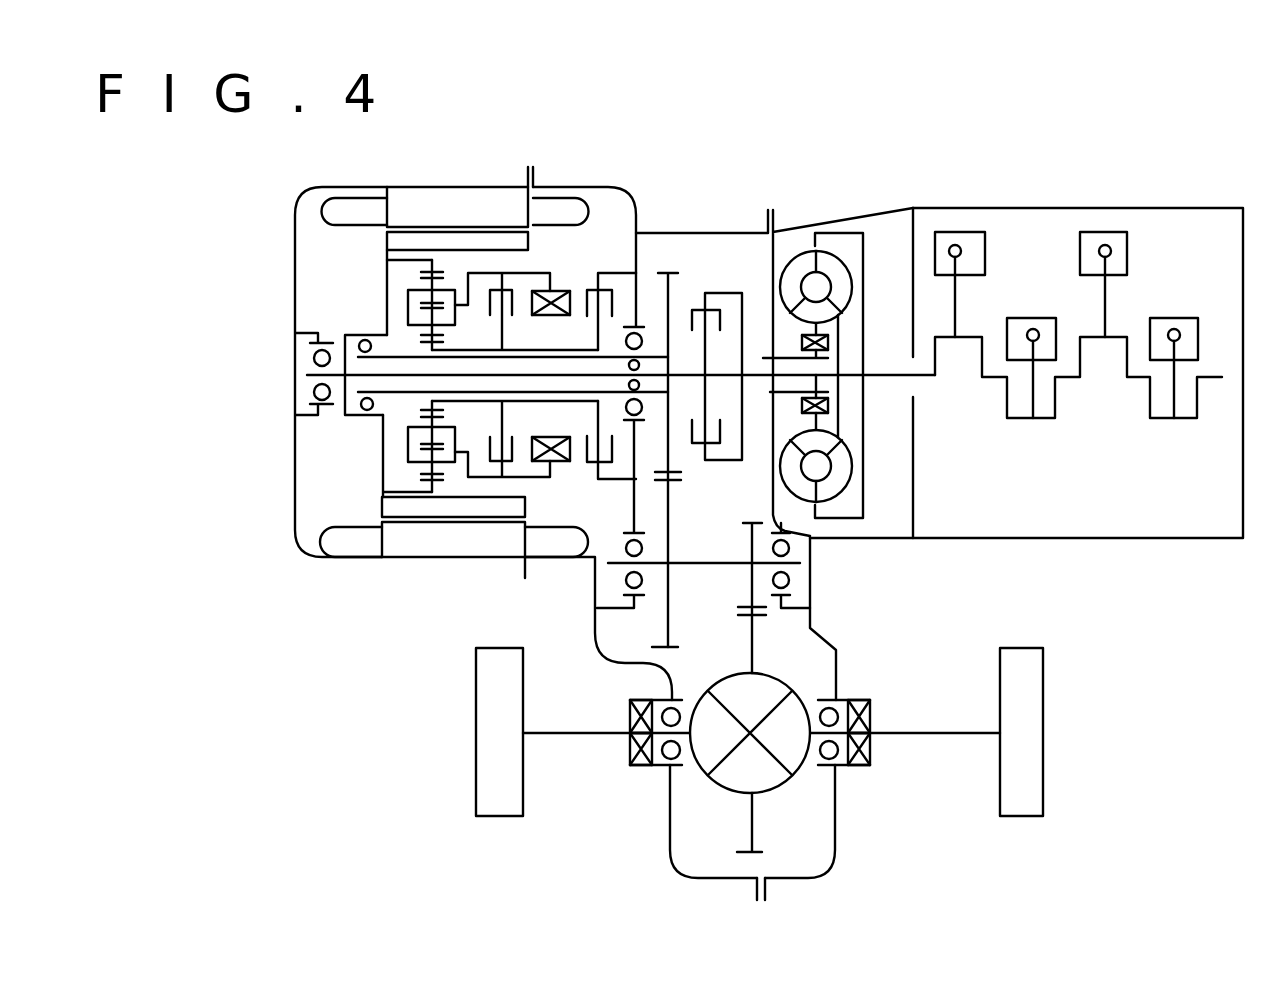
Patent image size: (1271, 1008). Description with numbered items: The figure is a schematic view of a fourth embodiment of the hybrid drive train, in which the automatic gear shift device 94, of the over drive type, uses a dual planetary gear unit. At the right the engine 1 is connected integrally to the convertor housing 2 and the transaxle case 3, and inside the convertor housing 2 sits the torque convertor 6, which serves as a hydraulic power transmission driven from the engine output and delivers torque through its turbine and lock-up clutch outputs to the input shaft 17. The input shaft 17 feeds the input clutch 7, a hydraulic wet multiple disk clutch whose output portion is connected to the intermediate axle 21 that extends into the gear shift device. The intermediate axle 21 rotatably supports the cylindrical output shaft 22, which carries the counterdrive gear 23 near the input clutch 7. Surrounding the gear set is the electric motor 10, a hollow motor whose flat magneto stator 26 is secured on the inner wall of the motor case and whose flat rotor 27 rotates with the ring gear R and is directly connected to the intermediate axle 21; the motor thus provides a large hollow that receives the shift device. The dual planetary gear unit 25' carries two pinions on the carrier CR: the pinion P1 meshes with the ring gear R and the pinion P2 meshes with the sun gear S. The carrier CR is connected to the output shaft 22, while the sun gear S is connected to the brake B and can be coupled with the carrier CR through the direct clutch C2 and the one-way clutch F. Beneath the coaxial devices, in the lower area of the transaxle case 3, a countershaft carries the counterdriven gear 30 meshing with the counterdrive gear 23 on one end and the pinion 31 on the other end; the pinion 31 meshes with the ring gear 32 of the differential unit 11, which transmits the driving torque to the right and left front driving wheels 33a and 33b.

The engine 1 is at (1081, 203).
The convertor housing 2 is at (834, 218).
The transaxle case 3 is at (662, 230).
The torque convertor 6 is at (794, 230).
The input clutch 7 is at (697, 300).
The electric motor 10 is at (487, 183).
The differential unit 11 is at (810, 675).
The input shaft 17 is at (822, 363).
The intermediate axle 21 is at (363, 440).
The output shaft 22 is at (420, 405).
The counterdrive gear 23 is at (682, 470).
The dual planetary gear unit 25' is at (434, 443).
The flat magneto stator 26 is at (450, 210).
The flat rotor 27 is at (408, 246).
The counterdriven gear 30 is at (658, 638).
The pinion 31 is at (752, 588).
The ring gear 32 is at (752, 822).
The front driving wheel 33a is at (495, 768).
The front driving wheel 33b is at (1030, 775).
The automatic gear shift device 94 is at (598, 251).
The sun gear S is at (420, 413).
The pinion P1 is at (425, 476).
The pinion P2 is at (427, 464).
The ring gear R is at (432, 490).
The carrier CR is at (445, 500).
The direct clutch C2 is at (500, 470).
The one-way clutch F is at (552, 475).
The brake B is at (598, 480).